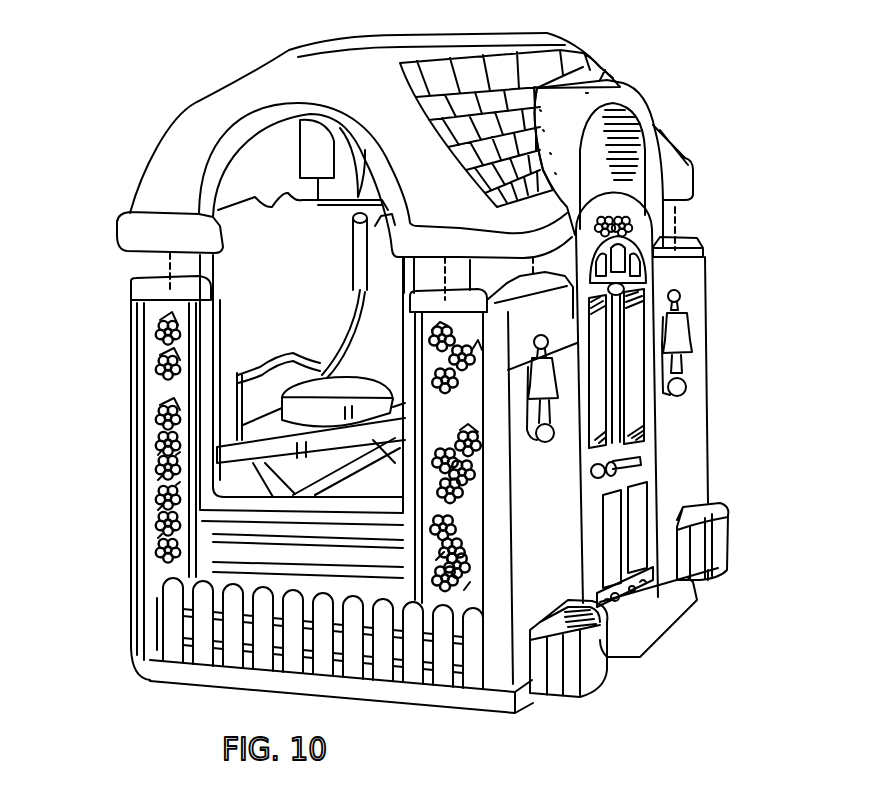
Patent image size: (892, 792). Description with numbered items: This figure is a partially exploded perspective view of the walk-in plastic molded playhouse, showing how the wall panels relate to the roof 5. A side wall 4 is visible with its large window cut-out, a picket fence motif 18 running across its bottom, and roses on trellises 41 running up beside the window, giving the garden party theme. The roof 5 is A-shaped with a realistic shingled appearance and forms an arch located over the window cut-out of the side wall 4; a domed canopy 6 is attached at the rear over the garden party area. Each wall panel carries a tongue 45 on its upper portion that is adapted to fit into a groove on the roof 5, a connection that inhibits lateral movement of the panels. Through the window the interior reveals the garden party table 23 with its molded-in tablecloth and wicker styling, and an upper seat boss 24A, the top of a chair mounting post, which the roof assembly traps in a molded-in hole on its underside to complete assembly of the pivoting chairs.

The side wall 4 is at (157, 393).
The roof 5 is at (612, 72).
The domed canopy 6 is at (193, 103).
The picket fence motif 18 is at (440, 653).
The table top 23 is at (250, 448).
The upper seat boss 24A is at (355, 218).
The rose detail 41 is at (450, 532).
The tongue 45 is at (150, 283).